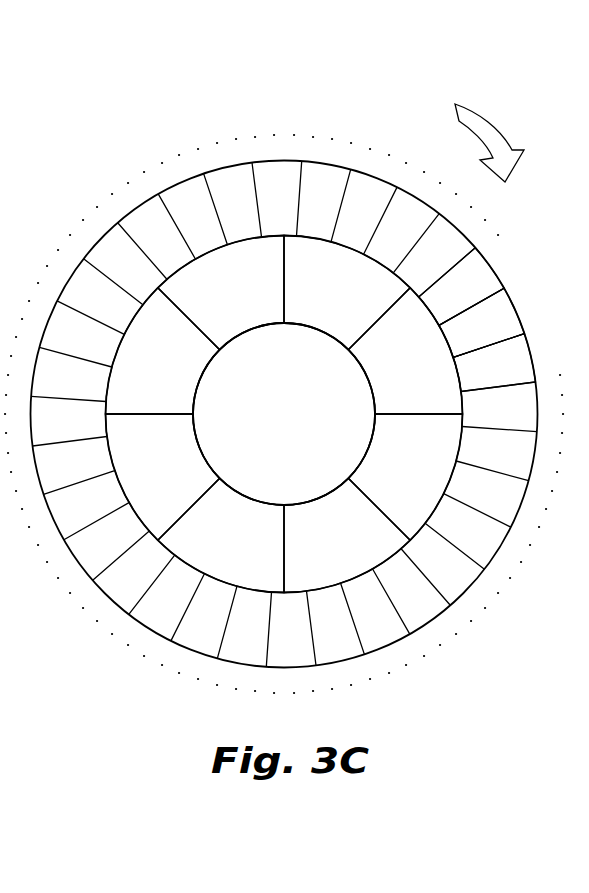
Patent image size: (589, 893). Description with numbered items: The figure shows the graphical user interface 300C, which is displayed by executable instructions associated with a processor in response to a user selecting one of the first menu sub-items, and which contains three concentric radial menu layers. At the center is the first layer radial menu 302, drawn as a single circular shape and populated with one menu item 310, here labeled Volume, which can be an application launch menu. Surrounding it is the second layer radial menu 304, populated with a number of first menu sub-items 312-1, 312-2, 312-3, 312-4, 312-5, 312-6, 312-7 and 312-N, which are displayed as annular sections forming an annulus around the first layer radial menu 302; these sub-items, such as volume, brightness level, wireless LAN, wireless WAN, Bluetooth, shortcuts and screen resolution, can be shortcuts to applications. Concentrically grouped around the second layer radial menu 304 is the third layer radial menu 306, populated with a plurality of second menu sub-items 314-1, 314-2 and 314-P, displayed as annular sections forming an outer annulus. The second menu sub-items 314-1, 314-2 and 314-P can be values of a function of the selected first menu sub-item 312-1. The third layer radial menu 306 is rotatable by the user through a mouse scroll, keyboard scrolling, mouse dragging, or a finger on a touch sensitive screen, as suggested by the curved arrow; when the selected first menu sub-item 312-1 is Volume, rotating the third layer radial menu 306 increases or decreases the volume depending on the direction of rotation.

The graphical user interface 300C is at (314, 76).
The first layer radial menu 302 is at (356, 486).
The second layer radial menu 304 is at (193, 568).
The third layer radial menu 306 is at (208, 162).
The menu item 310 is at (268, 442).
The first menu sub-item 312-1 is at (210, 317).
The first menu sub-item 312-2 is at (295, 277).
The first menu sub-item 312-3 is at (385, 354).
The first menu sub-item 312-4 is at (388, 511).
The first menu sub-item 312-5 is at (312, 572).
The first menu sub-item 312-6 is at (259, 574).
The first menu sub-item 312-7 is at (140, 456).
The first menu sub-item 312-N is at (133, 404).
The second menu sub-item 314-P is at (476, 258).
The second menu sub-item 314-1 is at (506, 304).
The second menu sub-item 314-2 is at (523, 355).